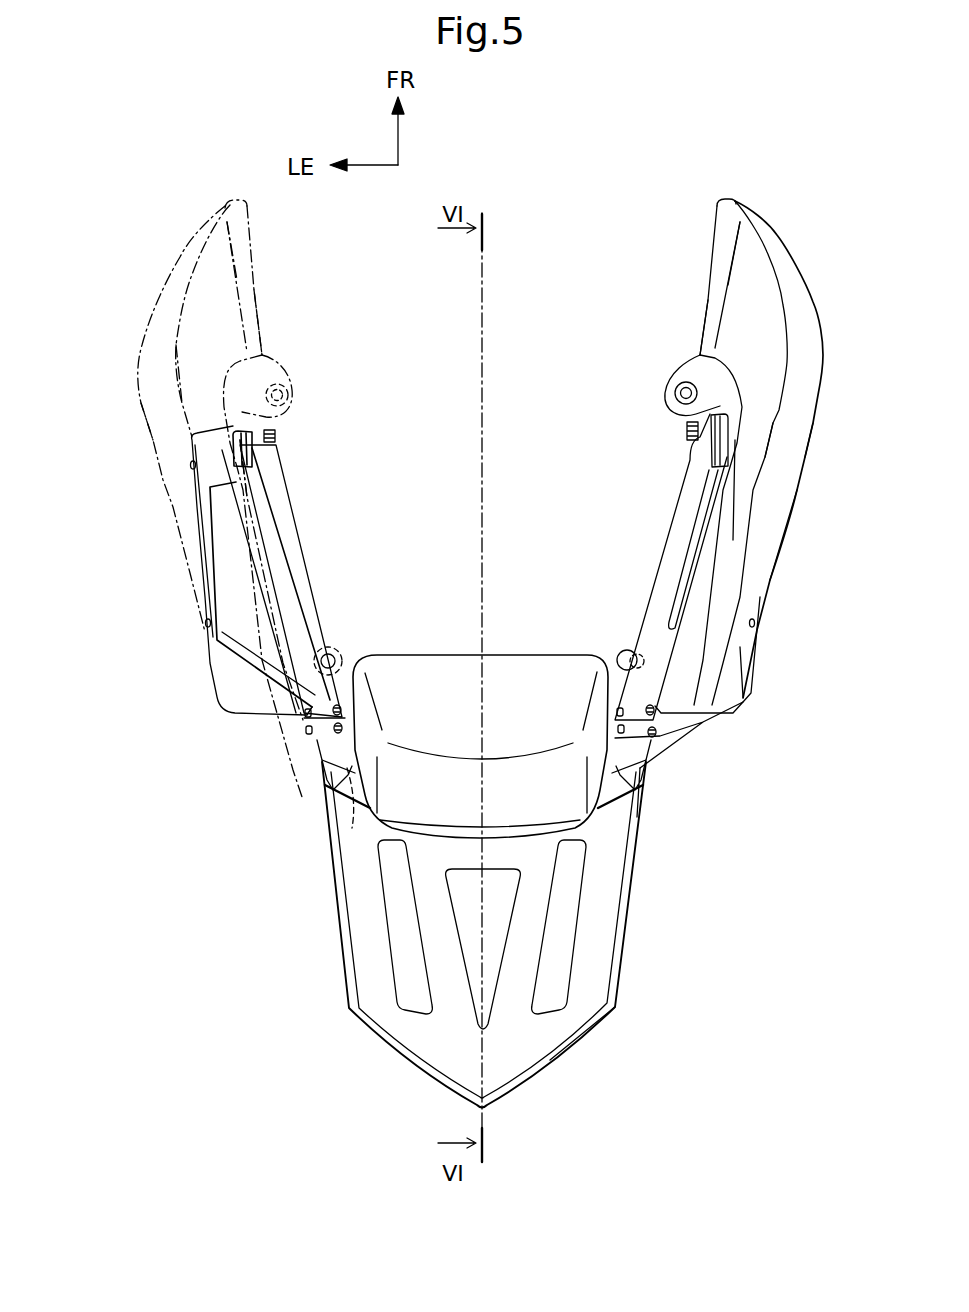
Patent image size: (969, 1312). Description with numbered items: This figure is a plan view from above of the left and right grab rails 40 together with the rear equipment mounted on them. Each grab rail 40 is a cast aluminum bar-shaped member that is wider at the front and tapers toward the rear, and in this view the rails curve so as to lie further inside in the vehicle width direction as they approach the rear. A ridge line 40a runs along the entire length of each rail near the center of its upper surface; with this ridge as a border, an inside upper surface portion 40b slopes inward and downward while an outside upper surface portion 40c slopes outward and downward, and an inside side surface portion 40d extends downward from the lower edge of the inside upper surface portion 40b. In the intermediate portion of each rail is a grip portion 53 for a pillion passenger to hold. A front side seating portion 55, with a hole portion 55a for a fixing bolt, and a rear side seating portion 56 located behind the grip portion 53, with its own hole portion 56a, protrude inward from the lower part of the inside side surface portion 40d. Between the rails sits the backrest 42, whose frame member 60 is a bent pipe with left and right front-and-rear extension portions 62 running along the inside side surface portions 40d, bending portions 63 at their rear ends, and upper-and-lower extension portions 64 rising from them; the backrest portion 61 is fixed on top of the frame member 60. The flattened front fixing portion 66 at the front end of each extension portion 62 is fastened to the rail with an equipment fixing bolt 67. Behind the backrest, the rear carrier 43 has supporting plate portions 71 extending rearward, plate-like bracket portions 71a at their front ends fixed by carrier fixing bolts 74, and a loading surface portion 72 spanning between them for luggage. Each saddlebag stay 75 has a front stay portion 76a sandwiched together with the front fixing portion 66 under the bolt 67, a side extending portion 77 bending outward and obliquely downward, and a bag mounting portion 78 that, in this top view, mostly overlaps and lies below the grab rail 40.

The grab rail 40 is at (166, 244).
The ridge line 40a is at (177, 366).
The inside upper surface portion 40b is at (160, 320).
The outside upper surface portion 40c is at (225, 258).
The inside side surface portion 40d is at (250, 295).
The backrest 42 is at (415, 637).
The rear carrier 43 is at (541, 1082).
The grip portion 53 is at (762, 533).
The front side seating portion 55 is at (289, 372).
The hole portion 55a is at (289, 395).
The rear side seating portion 56 is at (329, 647).
The hole portion 56a is at (338, 663).
The frame member 60 is at (347, 773).
The backrest portion 61 is at (465, 672).
The front-and-rear extension portion 62 is at (285, 530).
The bending portion 63 is at (305, 712).
The upper-and-lower extension portion 64 is at (327, 753).
The front fixing portion 66 is at (258, 447).
The equipment fixing bolt 67 is at (277, 431).
The supporting plate portion 71 is at (333, 923).
The plate-like bracket portion 71a is at (304, 723).
The loading surface portion 72 is at (443, 1043).
The carrier fixing bolt 74 is at (307, 737).
The saddlebag stay 75 is at (196, 662).
The stay portion 76a is at (217, 463).
The side extending portion 77 is at (213, 447).
The bag mounting portion 78 is at (207, 560).